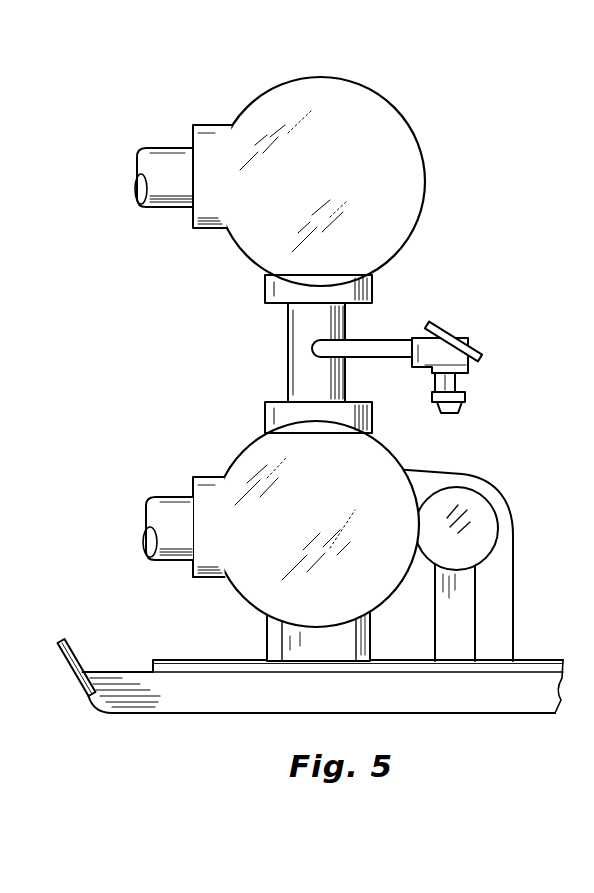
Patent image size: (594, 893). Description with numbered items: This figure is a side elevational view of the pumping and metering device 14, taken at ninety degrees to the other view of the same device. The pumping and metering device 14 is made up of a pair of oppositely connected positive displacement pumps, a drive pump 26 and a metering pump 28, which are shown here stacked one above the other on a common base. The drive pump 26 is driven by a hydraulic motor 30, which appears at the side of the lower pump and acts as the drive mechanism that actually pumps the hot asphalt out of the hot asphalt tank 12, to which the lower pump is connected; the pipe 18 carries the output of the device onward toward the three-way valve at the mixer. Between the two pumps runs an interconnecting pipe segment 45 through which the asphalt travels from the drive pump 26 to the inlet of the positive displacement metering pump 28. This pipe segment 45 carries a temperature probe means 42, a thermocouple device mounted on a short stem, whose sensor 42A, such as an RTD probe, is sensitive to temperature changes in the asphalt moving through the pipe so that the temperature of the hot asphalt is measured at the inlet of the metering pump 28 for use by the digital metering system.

The hot asphalt tank 12 is at (168, 497).
The pumping and metering device 14 is at (200, 108).
The pipe 18 is at (147, 146).
The positive displacement pump 26 is at (252, 438).
The positive displacement metering pump 28 is at (265, 97).
The hydraulic motor 30 is at (488, 541).
The temperature probe means 42 is at (455, 329).
The sensor 42A is at (341, 366).
The connecting column 45 is at (290, 371).